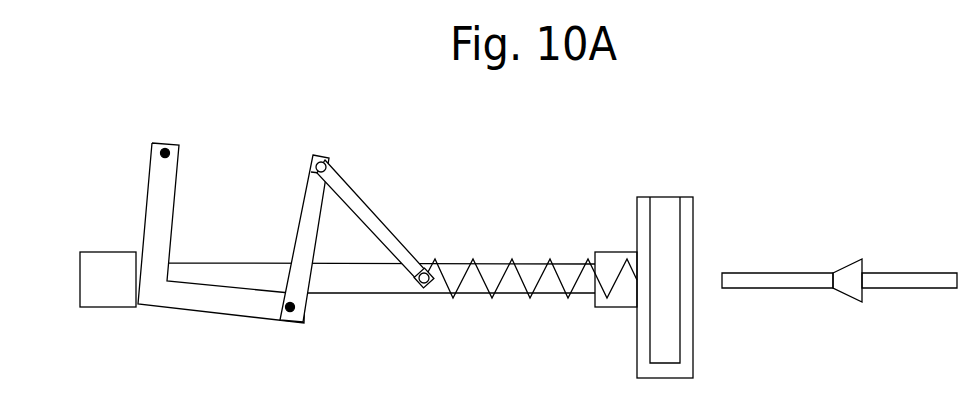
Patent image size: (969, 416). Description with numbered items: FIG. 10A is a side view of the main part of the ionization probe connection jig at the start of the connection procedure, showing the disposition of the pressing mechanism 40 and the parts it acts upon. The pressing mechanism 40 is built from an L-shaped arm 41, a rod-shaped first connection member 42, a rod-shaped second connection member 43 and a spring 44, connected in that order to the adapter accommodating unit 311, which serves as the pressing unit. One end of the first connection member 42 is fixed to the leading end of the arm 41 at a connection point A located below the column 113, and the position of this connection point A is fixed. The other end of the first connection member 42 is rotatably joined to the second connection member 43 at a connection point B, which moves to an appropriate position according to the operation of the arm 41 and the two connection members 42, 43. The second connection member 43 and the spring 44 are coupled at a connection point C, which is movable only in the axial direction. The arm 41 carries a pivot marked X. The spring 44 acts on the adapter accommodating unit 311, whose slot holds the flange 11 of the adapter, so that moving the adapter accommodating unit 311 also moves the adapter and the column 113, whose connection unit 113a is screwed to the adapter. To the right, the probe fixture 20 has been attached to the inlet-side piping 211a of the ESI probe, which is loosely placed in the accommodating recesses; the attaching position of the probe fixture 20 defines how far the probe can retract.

The pressing mechanism 40 is at (459, 127).
The arm 41 is at (364, 212).
The first connection member 42 is at (277, 258).
The second connection member 43 is at (387, 234).
The spring 44 is at (512, 262).
The flange 11 is at (651, 248).
The adapter accommodating unit 311 is at (635, 196).
The column 113 is at (112, 307).
The connection unit 113a is at (605, 310).
The inlet-side piping 211a is at (762, 288).
The probe fixture 20 is at (842, 293).
The pivot point X is at (158, 140).
The connection point A is at (300, 323).
The connection point B is at (325, 157).
The connection point C is at (430, 283).